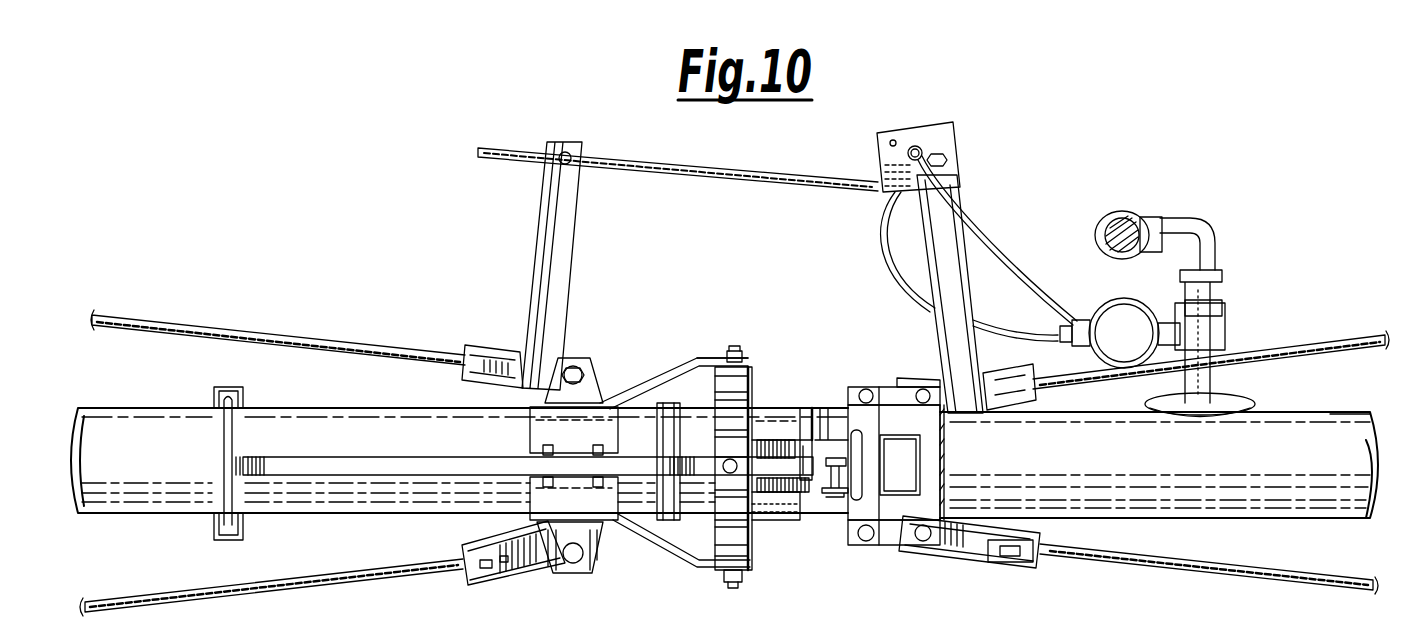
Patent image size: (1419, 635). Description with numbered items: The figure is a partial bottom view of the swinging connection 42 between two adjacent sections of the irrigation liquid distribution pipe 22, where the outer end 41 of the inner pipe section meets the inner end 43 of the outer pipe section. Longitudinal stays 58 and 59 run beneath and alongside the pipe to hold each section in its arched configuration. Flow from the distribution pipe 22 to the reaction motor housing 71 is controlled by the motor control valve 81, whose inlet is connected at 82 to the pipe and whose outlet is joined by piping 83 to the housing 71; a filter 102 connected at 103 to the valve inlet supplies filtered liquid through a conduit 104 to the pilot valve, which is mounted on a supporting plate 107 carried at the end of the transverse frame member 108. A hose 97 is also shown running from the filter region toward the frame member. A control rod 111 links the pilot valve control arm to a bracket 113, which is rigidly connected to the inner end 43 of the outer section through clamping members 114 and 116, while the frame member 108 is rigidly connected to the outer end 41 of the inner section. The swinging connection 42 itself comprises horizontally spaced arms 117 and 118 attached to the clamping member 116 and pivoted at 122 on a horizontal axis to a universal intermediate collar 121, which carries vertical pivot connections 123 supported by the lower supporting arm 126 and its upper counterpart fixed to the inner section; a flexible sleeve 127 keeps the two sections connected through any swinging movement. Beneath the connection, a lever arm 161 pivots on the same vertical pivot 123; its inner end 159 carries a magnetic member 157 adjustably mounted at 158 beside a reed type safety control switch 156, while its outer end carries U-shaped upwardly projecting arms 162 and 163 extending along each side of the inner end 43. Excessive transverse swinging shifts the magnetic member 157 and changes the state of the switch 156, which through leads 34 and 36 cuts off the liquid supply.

The irrigation liquid distribution pipe 22 is at (1321, 397).
The lead 34 is at (840, 520).
The lead 36 is at (857, 385).
The outer end 41 is at (1262, 520).
The swinging connection 42 is at (722, 319).
The inner end 43 is at (358, 406).
The longitudinal stay 58 is at (218, 327).
The longitudinal stay 59 is at (240, 590).
The reaction motor housing 71 is at (1137, 215).
The motor control valve 81 is at (1235, 313).
The inlet connection 82 is at (1233, 398).
The piping 83 is at (1213, 238).
The hose 97 is at (995, 255).
The filter 102 is at (1110, 305).
The filter connection 103 is at (1172, 325).
The conduit 104 is at (888, 245).
The supporting plate 107 is at (940, 135).
The transverse frame member 108 is at (940, 242).
The control rod 111 is at (752, 170).
The bracket 113 is at (562, 232).
The clamping member 114 is at (597, 366).
The clamping member 116 is at (543, 447).
The arm 117 is at (676, 366).
The arm 118 is at (660, 553).
The universal intermediate collar 121 is at (748, 362).
The horizontal pivot 122 is at (736, 351).
The vertical pivot connection 123 is at (760, 520).
The lower supporting arm 126 is at (790, 520).
The flexible sleeve 127 is at (700, 520).
The safety control switch 156 is at (886, 385).
The magnetic member 157 is at (835, 455).
The adjustable mounting 158 is at (830, 520).
The inner end of lever arm 159 is at (806, 438).
The lever arm 161 is at (372, 470).
The upwardly projecting arm 162 is at (228, 420).
The upwardly projecting arm 163 is at (213, 513).